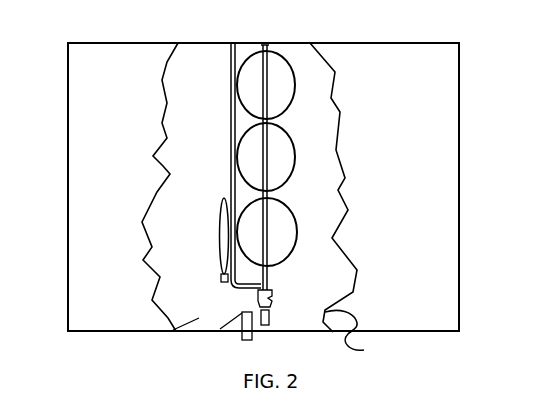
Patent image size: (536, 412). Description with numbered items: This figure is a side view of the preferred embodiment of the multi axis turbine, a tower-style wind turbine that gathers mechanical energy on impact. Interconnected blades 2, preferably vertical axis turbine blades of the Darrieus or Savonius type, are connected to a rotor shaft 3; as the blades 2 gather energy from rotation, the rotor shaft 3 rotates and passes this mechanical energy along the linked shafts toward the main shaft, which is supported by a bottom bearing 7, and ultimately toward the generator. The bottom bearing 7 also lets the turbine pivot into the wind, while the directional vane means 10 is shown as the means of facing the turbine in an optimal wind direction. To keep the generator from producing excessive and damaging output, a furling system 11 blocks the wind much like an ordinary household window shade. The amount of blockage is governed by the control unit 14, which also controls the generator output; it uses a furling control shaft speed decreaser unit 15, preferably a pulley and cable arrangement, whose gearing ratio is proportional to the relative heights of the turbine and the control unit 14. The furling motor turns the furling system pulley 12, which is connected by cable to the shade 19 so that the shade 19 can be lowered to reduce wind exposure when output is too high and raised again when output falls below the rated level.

The blades 2 is at (296, 152).
The rotor shaft 3 is at (270, 122).
The bottom bearing 7 is at (345, 204).
The directional vane means 10 is at (459, 137).
The furling system 11 is at (231, 118).
The furling system pulley 12 is at (222, 287).
The control unit 14 is at (232, 331).
The furling control shaft speed decreaser unit 15 is at (178, 333).
The shade 19 is at (231, 85).